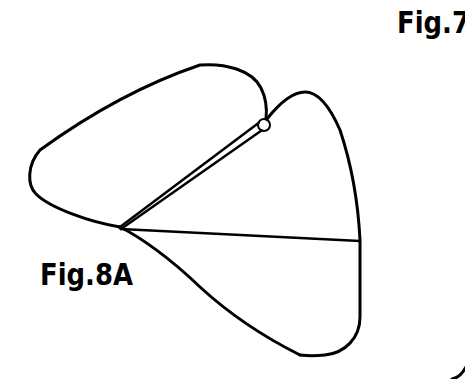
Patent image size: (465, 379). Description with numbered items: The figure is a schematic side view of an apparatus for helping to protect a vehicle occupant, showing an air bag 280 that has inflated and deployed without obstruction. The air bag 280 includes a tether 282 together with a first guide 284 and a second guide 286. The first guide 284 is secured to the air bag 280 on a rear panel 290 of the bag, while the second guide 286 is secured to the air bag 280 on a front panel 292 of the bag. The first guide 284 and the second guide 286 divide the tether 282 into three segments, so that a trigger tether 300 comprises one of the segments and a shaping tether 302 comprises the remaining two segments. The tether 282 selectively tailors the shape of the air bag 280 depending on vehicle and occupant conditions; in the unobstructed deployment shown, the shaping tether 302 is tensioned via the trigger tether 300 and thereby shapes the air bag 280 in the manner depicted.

The air bag 280 is at (161, 77).
The tether 282 is at (193, 178).
The first guide 284 is at (118, 224).
The second guide 286 is at (267, 133).
The rear panel 290 is at (201, 287).
The front panel 292 is at (361, 252).
The trigger tether 300 is at (210, 232).
The shaping tether 302 is at (226, 157).